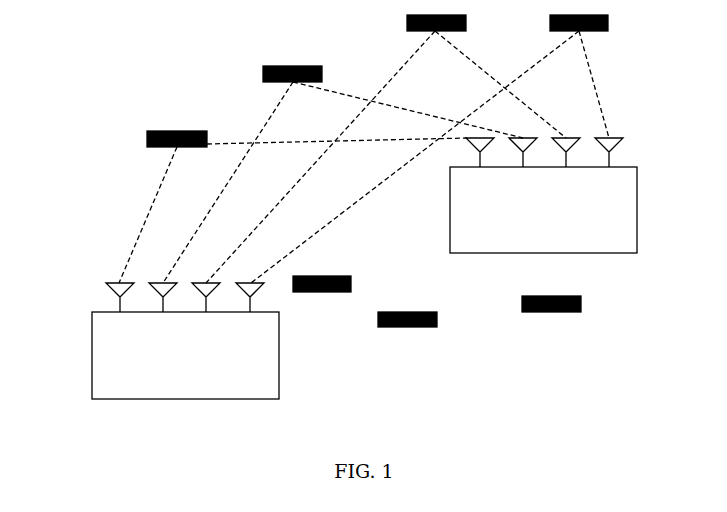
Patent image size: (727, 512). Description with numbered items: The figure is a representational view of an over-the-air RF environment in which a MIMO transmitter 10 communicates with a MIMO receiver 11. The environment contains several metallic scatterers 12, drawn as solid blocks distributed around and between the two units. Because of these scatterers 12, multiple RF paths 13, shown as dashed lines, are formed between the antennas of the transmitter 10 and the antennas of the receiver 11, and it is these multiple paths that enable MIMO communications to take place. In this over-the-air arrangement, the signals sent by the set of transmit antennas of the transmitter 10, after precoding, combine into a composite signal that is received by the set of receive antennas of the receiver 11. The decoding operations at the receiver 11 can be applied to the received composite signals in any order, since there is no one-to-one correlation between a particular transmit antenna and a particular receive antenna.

The MIMO transmitter 10 is at (447, 210).
The MIMO receiver 11 is at (89, 356).
The metallic scatterers 12 is at (404, 22).
The RF paths 13 is at (378, 180).